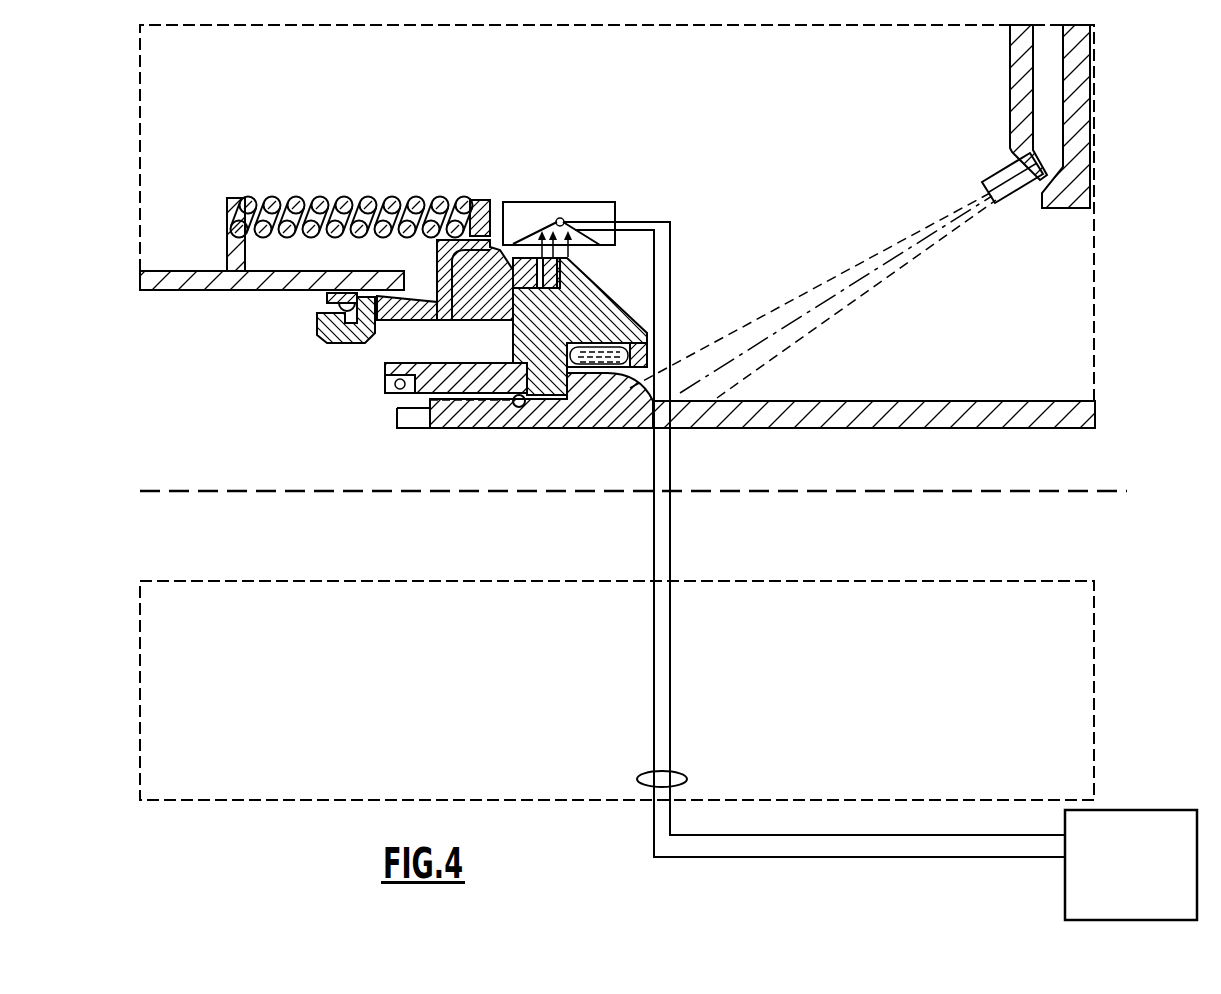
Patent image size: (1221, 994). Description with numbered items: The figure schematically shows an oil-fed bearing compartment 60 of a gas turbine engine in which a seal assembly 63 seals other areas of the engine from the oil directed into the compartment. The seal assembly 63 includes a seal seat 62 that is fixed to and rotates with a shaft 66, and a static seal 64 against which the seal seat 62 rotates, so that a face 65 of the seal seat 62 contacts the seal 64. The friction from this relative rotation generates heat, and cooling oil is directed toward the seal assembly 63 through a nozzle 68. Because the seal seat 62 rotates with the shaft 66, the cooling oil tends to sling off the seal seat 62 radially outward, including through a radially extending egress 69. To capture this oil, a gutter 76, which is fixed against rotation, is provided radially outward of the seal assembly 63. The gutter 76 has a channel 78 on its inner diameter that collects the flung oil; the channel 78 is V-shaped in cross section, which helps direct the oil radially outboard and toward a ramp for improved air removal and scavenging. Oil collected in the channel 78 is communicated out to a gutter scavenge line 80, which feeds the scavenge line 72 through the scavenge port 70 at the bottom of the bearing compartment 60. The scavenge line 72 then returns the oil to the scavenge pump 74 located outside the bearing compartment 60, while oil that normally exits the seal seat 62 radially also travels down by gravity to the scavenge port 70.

The bearing compartment 60 is at (418, 83).
The seal seat 62 is at (583, 333).
The seal assembly 63 is at (500, 332).
The seal 64 is at (487, 270).
The face 65 is at (475, 312).
The shaft 66 is at (782, 410).
The nozzle 68 is at (993, 177).
The egress 69 is at (545, 282).
The scavenge port 70 is at (658, 778).
The scavenge line 72 is at (882, 847).
The scavenge pump 74 is at (1143, 810).
The gutter 76 is at (518, 212).
The channel 78 is at (557, 218).
The gutter scavenge line 80 is at (662, 288).